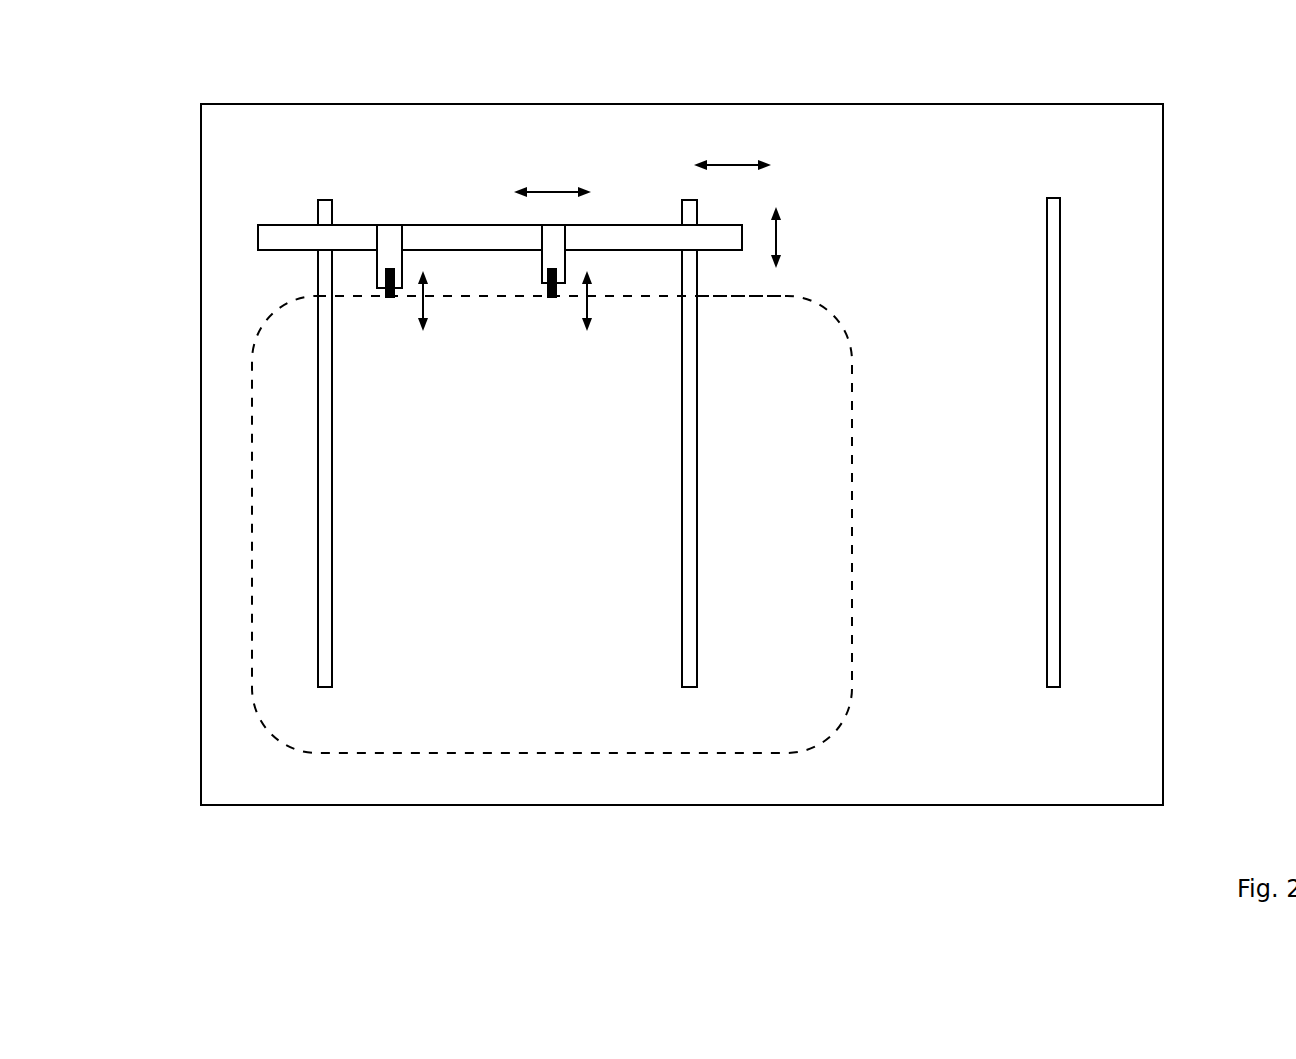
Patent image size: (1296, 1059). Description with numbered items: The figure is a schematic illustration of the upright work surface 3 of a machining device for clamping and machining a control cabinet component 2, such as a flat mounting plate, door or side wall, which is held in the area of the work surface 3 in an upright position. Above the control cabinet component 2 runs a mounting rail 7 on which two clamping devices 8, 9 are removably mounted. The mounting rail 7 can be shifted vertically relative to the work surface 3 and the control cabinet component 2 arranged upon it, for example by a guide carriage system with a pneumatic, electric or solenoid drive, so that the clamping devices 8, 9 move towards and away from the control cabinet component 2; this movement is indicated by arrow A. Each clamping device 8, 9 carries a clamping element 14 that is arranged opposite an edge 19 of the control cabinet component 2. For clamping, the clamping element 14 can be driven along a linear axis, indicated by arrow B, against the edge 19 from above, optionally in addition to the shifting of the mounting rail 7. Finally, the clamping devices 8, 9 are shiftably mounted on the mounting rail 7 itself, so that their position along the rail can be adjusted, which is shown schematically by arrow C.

The control cabinet component 2 is at (535, 735).
The work surface 3 is at (1140, 367).
The mounting rail 7 is at (650, 240).
The clamping device 8 is at (392, 238).
The clamping device 9 is at (553, 238).
The clamping element 14 is at (385, 291).
The edge 19 is at (762, 300).
The arrow A is at (782, 235).
The arrow B is at (582, 312).
The arrow C is at (541, 190).